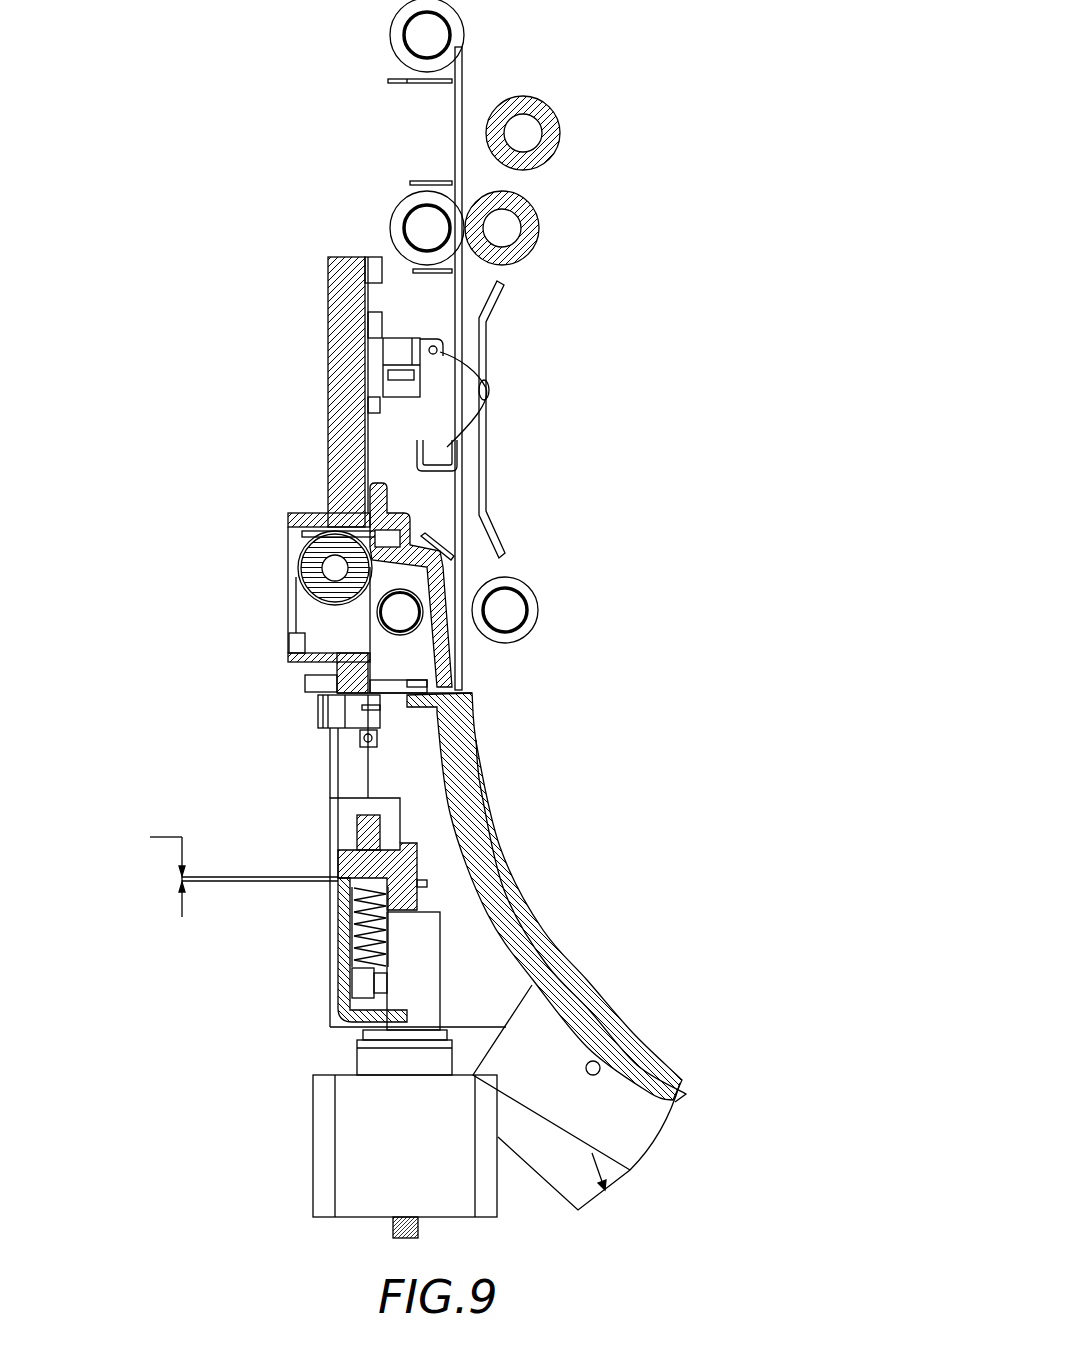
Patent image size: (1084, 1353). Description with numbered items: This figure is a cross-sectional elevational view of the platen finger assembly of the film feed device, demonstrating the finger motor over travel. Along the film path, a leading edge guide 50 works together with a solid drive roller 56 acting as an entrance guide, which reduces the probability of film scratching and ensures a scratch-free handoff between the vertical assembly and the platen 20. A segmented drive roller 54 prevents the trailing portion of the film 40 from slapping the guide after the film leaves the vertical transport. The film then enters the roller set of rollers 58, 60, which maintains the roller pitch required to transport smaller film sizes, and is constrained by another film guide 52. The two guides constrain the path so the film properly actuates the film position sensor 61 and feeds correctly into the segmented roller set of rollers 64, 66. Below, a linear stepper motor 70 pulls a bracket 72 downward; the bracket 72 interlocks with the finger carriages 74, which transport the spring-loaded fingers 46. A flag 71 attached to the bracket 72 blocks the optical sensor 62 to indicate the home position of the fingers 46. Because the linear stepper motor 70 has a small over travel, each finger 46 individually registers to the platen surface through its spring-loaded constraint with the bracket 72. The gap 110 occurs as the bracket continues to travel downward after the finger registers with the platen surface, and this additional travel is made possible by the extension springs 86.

The segmented drive roller 54 is at (390, 32).
The leading edge guide 50 is at (452, 115).
The drive roller 56 is at (560, 136).
The roller 58 is at (392, 212).
The roller 60 is at (540, 237).
The film position sensor 61 is at (490, 393).
The film guide 52 is at (487, 490).
The roller 66 is at (538, 600).
The roller 64 is at (393, 652).
The finger 46 is at (440, 627).
The finger carriage 74 is at (290, 658).
The optical sensor 62 is at (322, 707).
The film 40 is at (490, 800).
The platen 20 is at (510, 927).
The flag 71 is at (330, 817).
The extension spring 86 is at (343, 896).
The bracket 72 is at (341, 943).
The gap 110 is at (149, 869).
The linear stepper motor 70 is at (313, 1146).